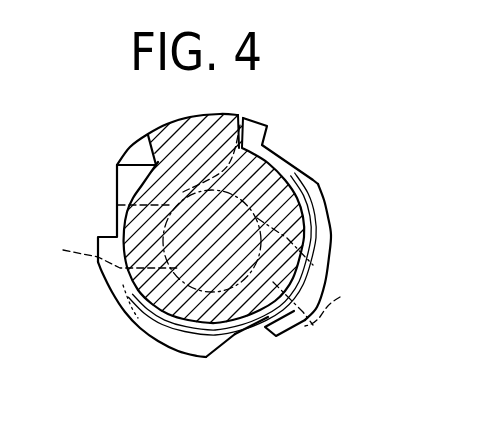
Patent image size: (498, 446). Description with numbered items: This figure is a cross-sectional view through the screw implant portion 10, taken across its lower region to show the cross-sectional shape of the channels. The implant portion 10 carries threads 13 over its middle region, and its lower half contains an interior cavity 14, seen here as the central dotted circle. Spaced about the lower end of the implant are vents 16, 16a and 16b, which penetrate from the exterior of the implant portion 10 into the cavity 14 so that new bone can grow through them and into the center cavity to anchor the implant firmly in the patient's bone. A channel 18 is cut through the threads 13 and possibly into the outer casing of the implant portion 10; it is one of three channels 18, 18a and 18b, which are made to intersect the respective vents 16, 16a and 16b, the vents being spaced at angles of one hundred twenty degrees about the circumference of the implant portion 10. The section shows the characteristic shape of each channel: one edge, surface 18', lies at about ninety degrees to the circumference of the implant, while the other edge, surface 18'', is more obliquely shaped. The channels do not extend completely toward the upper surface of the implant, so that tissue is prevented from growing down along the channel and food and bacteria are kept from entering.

The implant portion 10 is at (100, 345).
The threads 13 is at (302, 271).
The cavity 14 is at (292, 242).
The vent 16 is at (237, 305).
The vent 16a is at (106, 252).
The vent 16b is at (237, 115).
The channel 18 is at (251, 361).
The surface 18' is at (290, 343).
The surface 18'' is at (206, 369).
The channel 18a is at (118, 202).
The channel 18b is at (283, 161).